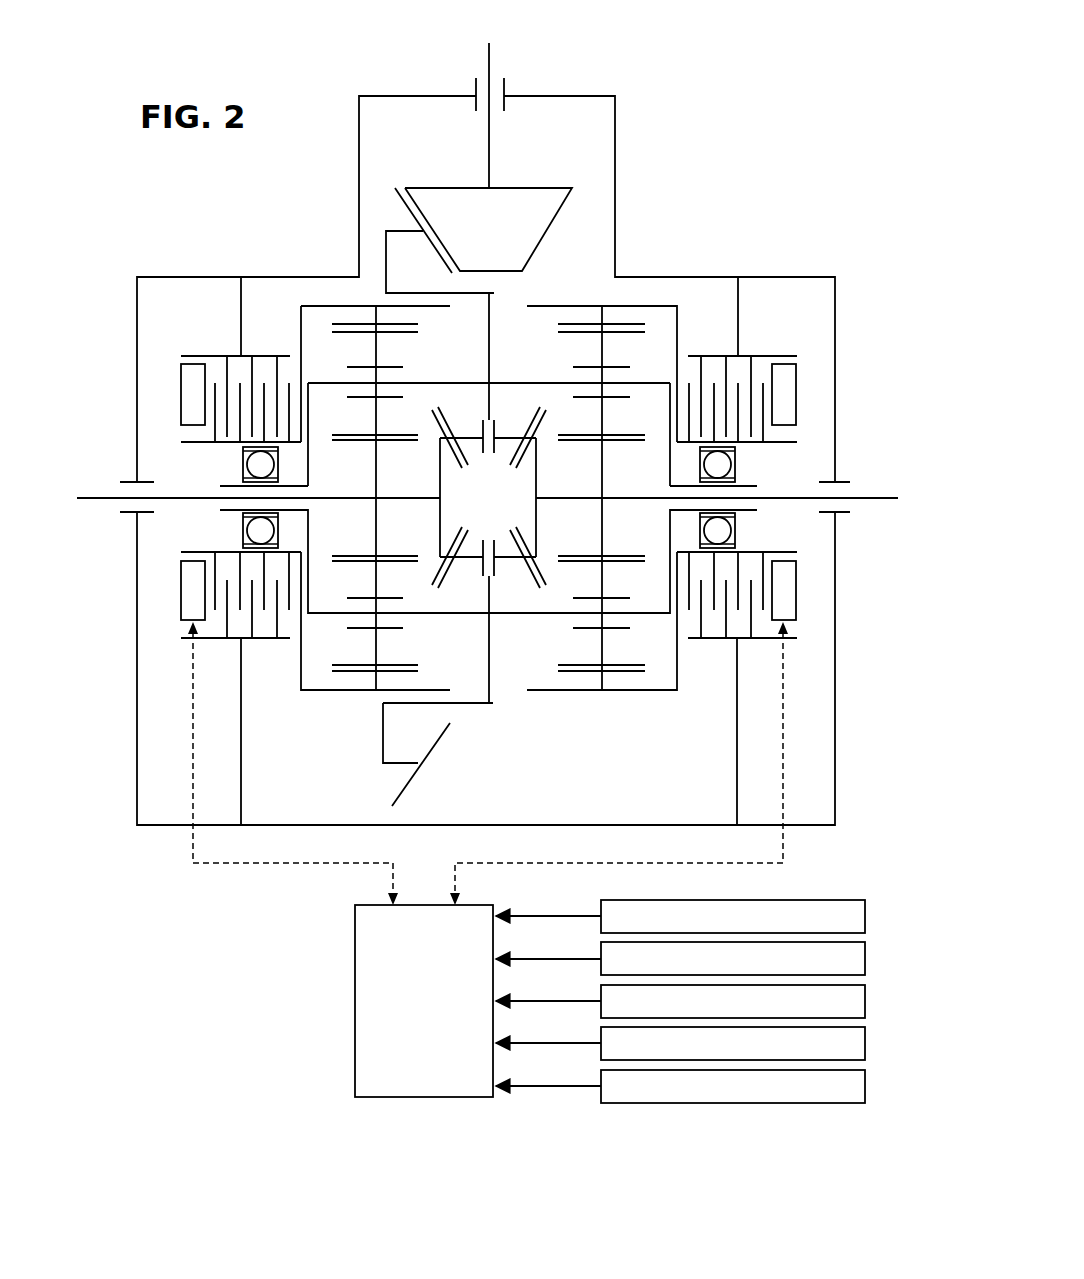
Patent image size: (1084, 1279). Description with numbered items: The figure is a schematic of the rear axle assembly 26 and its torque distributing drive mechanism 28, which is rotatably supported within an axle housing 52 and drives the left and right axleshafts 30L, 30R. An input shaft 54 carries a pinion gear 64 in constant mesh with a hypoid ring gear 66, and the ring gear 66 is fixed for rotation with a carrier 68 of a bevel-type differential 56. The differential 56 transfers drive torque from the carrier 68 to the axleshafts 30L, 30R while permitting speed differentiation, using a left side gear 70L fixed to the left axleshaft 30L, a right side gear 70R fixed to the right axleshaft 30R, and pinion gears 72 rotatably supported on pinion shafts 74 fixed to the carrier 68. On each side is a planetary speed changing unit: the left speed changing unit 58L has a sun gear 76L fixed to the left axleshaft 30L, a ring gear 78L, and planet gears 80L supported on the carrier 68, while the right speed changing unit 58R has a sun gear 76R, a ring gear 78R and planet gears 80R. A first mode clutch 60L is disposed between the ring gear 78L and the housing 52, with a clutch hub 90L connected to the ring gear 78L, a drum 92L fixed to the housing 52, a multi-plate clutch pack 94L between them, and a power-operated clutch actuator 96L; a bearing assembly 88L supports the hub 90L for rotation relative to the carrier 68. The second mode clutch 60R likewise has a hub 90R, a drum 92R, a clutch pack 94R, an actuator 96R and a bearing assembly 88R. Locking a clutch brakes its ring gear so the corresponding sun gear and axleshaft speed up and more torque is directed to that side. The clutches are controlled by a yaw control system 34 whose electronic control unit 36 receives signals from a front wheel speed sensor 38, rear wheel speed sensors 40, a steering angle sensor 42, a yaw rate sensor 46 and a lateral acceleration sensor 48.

The rear axle assembly 26 is at (690, 15).
The torque distributing drive mechanism 28 is at (826, 165).
The left axleshaft 30L is at (88, 497).
The right axleshaft 30R is at (877, 497).
The yaw control system 34 is at (308, 1060).
The electronic control unit 36 is at (370, 934).
The front wheel speed sensor 38 is at (866, 912).
The rear wheel speed sensors 40 is at (866, 955).
The steering angle sensor 42 is at (866, 998).
The yaw rate sensor 46 is at (866, 1040).
The lateral acceleration sensor 48 is at (866, 1083).
The axle housing 52 is at (836, 307).
The input shaft 54 is at (490, 145).
The differential 56 is at (514, 424).
The left speed changing unit 58L is at (322, 674).
The right speed changing unit 58R is at (658, 674).
The first mode clutch 60L is at (164, 398).
The second mode clutch 60R is at (813, 388).
The pinion gear 64 is at (526, 238).
The hypoid ring gear 66 is at (478, 705).
The carrier 68 is at (528, 615).
The left side gear 70L is at (440, 462).
The right side gear 70R is at (537, 473).
The pinion gears 72 is at (446, 443).
The pinion shafts 74 is at (492, 402).
The left sun gear 76L is at (377, 520).
The right sun gear 76R is at (603, 520).
The left ring gear 78L is at (377, 677).
The right ring gear 78R is at (600, 686).
The left planet gears 80L is at (377, 342).
The right planet gears 80R is at (603, 345).
The left bearing assembly 88L is at (242, 526).
The right bearing assembly 88R is at (736, 526).
The left clutch hub 90L is at (196, 443).
The right clutch hub 90R is at (766, 443).
The left drum 92L is at (261, 355).
The right drum 92R is at (739, 313).
The left multi-plate clutch pack 94L is at (243, 617).
The right multi-plate clutch pack 94R is at (731, 612).
The left power-operated clutch actuator 96L is at (195, 595).
The right power-operated clutch actuator 96R is at (786, 590).